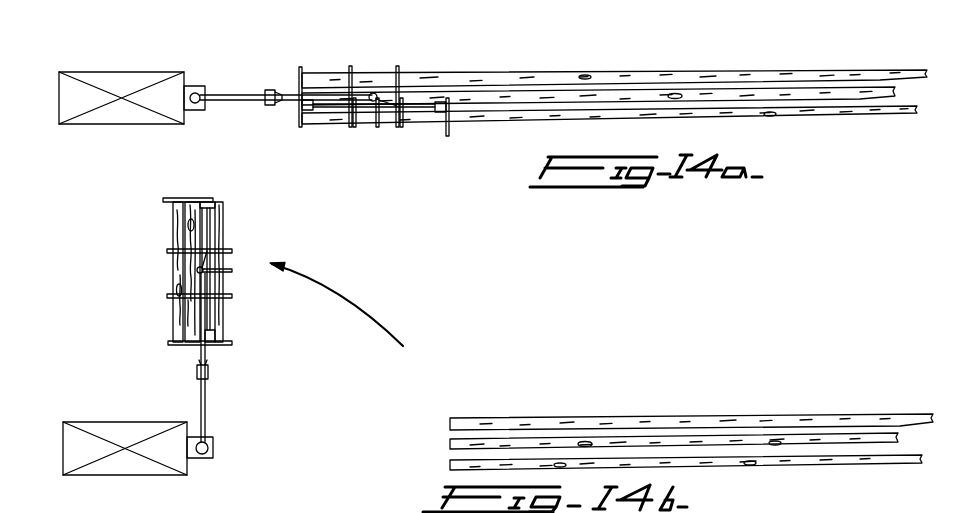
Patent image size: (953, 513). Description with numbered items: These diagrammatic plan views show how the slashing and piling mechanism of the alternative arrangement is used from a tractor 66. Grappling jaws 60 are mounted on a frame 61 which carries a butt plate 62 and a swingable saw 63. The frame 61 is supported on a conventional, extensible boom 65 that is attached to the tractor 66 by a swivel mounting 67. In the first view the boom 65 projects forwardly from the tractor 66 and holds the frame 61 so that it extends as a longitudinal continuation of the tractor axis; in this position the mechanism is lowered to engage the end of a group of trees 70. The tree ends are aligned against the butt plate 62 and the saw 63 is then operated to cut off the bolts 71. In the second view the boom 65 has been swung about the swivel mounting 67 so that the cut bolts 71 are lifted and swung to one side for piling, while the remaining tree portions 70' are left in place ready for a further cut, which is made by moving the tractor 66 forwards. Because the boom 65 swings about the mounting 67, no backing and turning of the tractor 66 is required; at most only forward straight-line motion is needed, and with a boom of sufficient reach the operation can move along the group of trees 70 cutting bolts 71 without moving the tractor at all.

In FIG. 14A, the grappling jaws 60 is at (393, 128).
In FIG. 14A, the frame 61 is at (333, 108).
In FIG. 14A, the butt plate 62 is at (301, 67).
In FIG. 14A, the swingable saw 63 is at (447, 136).
In FIG. 14B, the swingable saw 63 is at (163, 198).
In FIG. 14A, the extensible boom 65 is at (230, 93).
In FIG. 14B, the extensible boom 65 is at (208, 402).
In FIG. 14A, the tractor 66 is at (111, 77).
In FIG. 14B, the tractor 66 is at (128, 409).
In FIG. 14A, the swivel mounting 67 is at (198, 104).
In FIG. 14B, the swivel mounting 67 is at (210, 453).
In FIG. 14A, the group of trees 70 is at (614, 81).
In FIG. 14B, the remaining tree portions 70' is at (691, 421).
In FIG. 14B, the bolts 71 is at (224, 224).